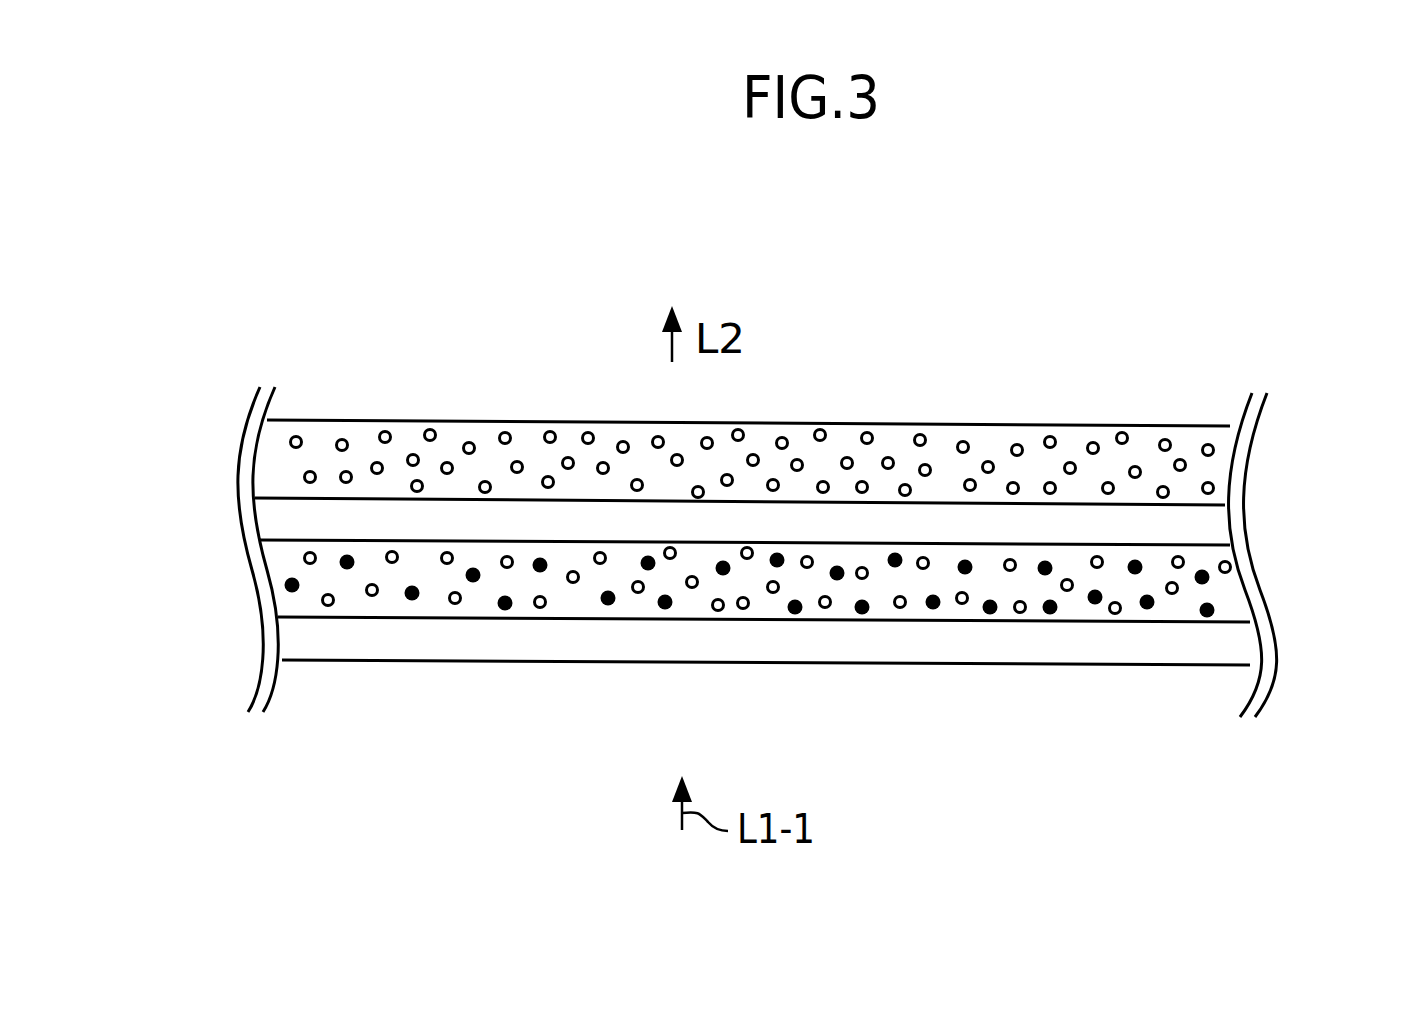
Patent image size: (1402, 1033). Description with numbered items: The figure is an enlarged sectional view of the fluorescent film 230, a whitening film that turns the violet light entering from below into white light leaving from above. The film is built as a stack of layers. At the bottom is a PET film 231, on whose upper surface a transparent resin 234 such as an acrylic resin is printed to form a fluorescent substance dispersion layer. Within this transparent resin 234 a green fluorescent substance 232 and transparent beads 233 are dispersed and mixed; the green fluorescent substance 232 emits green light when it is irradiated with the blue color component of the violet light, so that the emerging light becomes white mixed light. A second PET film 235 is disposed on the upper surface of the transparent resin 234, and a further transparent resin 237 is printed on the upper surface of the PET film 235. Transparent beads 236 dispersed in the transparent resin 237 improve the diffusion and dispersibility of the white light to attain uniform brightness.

The fluorescent film 230 is at (192, 565).
The PET film 231 is at (765, 643).
The green fluorescent substance 232 is at (1250, 625).
The transparent beads 233 is at (1225, 567).
The transparent resin (fluorescent substance dispersion layer) 234 is at (1212, 610).
The PET film 235 is at (1217, 525).
The transparent beads 236 is at (1020, 448).
The transparent resin 237 is at (1077, 437).